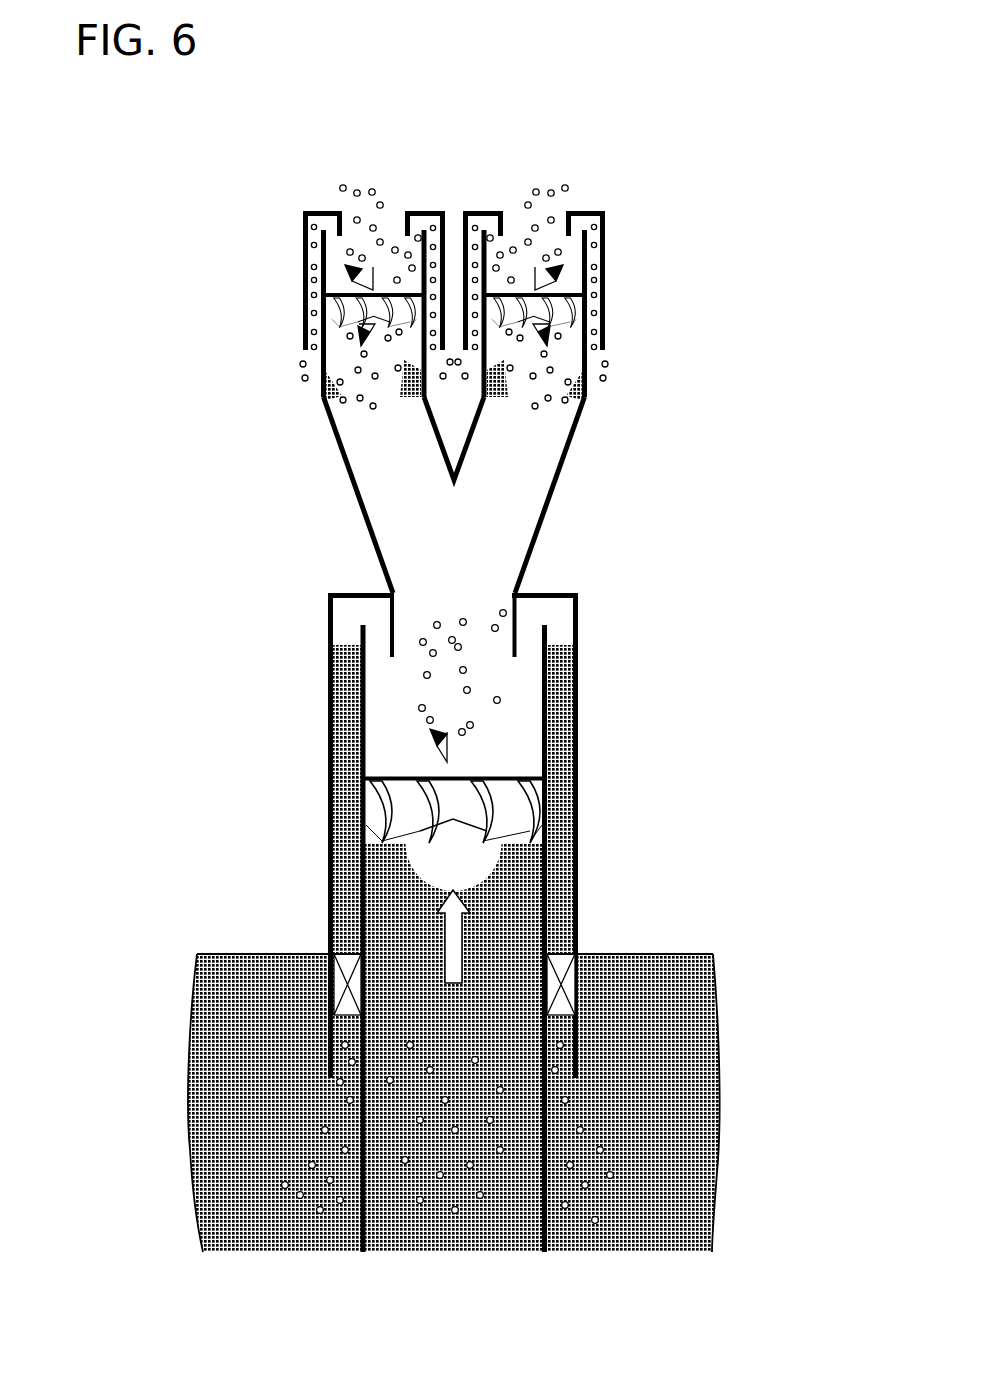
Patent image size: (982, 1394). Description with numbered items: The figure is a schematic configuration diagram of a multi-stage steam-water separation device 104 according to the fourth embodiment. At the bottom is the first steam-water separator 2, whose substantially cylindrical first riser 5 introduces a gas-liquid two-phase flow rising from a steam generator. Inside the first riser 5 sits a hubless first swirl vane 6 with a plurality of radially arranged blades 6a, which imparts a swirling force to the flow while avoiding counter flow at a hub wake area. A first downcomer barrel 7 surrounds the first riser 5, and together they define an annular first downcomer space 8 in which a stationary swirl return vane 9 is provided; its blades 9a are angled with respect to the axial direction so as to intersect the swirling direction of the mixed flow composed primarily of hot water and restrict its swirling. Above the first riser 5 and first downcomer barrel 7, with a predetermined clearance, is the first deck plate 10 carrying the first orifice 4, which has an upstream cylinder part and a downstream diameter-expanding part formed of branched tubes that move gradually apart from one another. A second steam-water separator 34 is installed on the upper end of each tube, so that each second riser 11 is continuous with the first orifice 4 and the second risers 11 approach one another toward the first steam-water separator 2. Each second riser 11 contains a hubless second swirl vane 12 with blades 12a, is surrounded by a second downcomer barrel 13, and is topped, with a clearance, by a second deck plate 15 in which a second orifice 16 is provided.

The multi-stage steam-water separation device 104 is at (680, 600).
The second steam-water separator 34 is at (272, 216).
The second deck plate 15 is at (315, 212).
The second orifice 16 is at (337, 220).
The second downcomer barrel 13 is at (303, 300).
The second riser 11 is at (322, 258).
The second swirl vane 12 is at (394, 296).
The blade 12a is at (363, 306).
The first orifice 4 is at (520, 592).
The first steam-water separator 2 is at (600, 786).
The first deck plate 10 is at (360, 592).
The first downcomer barrel 7 is at (578, 840).
The first downcomer space 8 is at (343, 888).
The first riser 5 is at (545, 702).
The first swirl vane 6 is at (382, 801).
The blade 6a is at (384, 812).
The swirl return vane 9 is at (566, 988).
The blade 9a is at (562, 956).